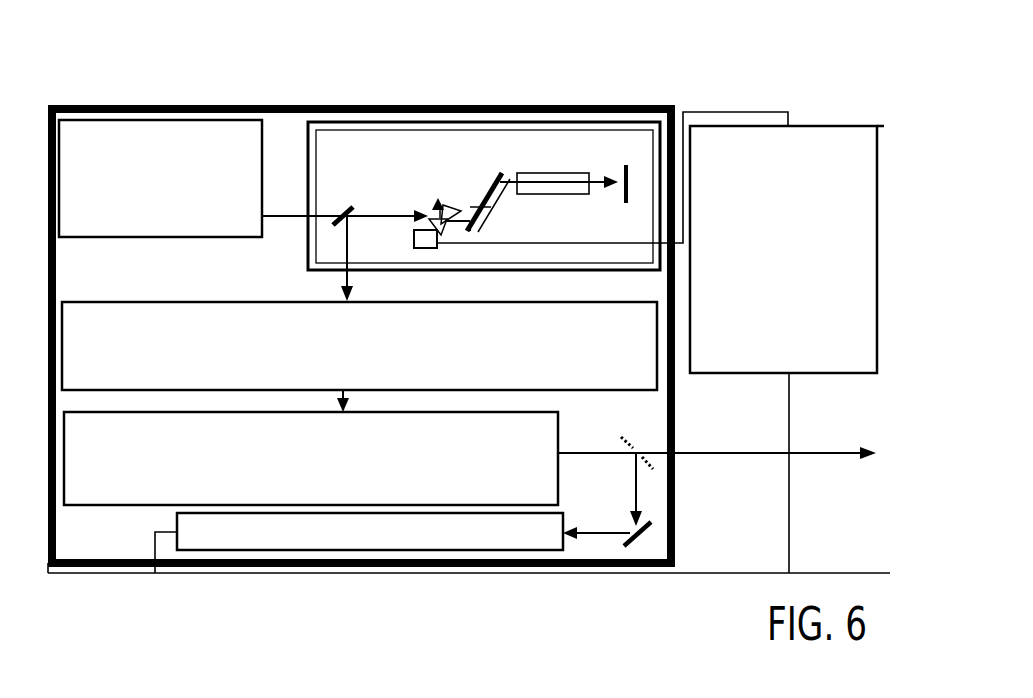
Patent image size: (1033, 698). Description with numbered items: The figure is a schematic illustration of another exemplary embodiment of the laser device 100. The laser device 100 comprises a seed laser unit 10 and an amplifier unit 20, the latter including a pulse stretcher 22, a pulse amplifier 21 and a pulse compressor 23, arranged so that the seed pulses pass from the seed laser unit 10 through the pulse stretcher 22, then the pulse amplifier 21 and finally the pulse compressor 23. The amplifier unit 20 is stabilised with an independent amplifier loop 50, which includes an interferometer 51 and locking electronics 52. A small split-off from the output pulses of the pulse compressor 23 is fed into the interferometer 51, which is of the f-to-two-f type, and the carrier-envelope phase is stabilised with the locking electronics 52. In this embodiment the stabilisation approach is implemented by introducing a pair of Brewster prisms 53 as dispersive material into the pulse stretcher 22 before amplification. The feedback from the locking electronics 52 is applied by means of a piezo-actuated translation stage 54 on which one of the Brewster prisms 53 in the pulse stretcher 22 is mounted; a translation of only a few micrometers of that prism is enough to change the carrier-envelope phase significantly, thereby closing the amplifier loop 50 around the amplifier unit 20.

The laser device 100 is at (238, 77).
The seed laser unit 10 is at (127, 132).
The pulse stretcher 22 is at (410, 138).
The Brewster prisms 53 is at (428, 206).
The piezo-actuated translation stage 54 is at (440, 248).
The pulse amplifier 21 is at (237, 318).
The amplifier unit 20 is at (402, 367).
The pulse compressor 23 is at (130, 492).
The amplifier loop 50 is at (756, 429).
The interferometer 51 is at (405, 550).
The locking electronics 52 is at (803, 363).